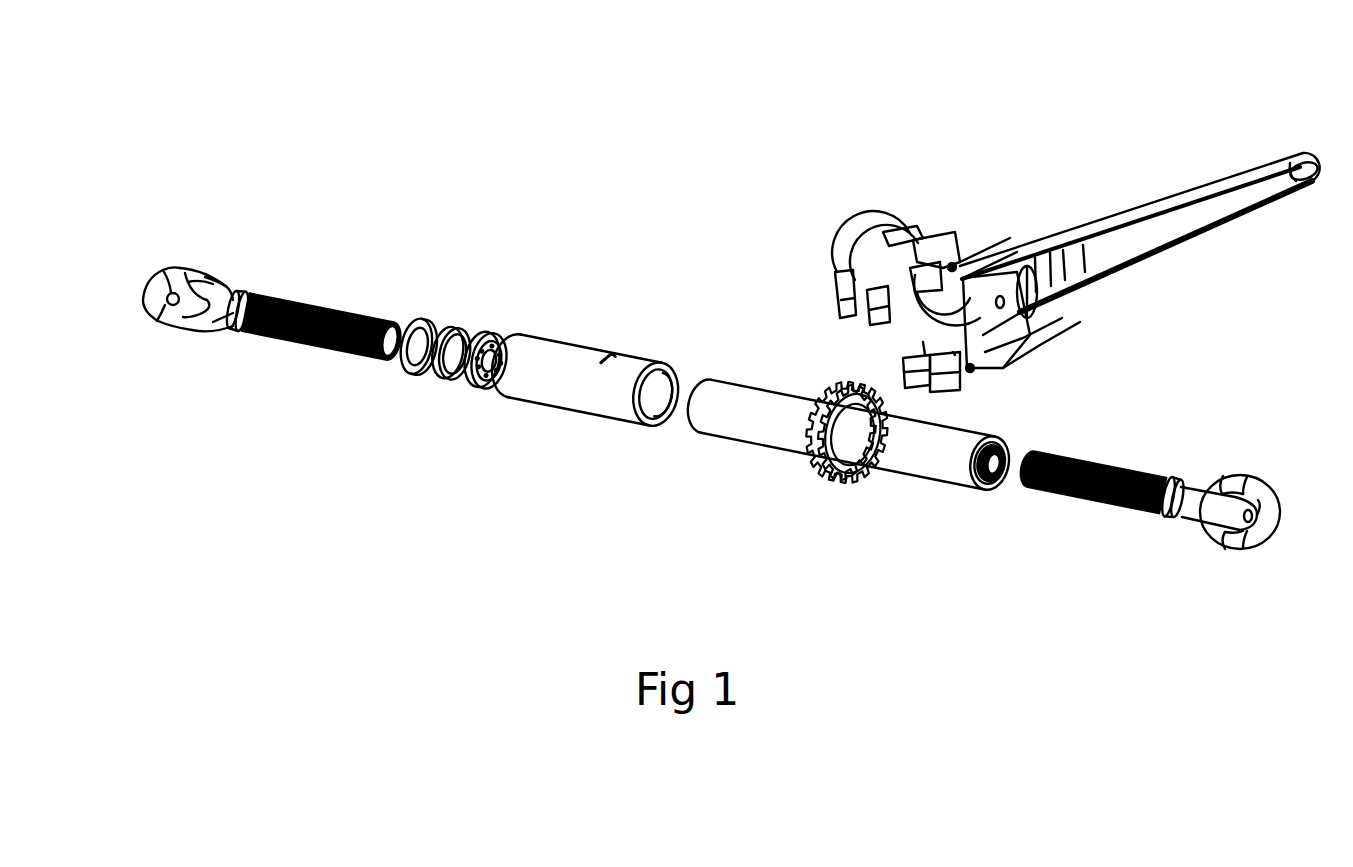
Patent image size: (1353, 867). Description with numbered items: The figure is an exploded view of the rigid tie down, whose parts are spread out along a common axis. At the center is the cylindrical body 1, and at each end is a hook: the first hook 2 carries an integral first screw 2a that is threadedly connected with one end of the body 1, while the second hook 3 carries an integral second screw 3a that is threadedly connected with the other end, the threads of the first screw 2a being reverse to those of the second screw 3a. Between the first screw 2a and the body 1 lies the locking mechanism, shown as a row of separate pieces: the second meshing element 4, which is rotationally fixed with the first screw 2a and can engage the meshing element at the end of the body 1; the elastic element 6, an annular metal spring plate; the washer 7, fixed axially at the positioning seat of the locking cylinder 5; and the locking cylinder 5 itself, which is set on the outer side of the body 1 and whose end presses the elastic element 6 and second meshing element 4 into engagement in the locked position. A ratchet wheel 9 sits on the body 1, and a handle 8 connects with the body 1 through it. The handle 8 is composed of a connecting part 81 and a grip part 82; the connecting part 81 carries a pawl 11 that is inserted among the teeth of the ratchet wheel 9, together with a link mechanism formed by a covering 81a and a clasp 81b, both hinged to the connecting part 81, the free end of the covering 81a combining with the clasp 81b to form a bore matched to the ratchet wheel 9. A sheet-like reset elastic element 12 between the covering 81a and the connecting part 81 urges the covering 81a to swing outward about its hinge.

The body 1 is at (740, 415).
The first hook 2 is at (172, 283).
The first screw 2a is at (358, 312).
The second hook 3 is at (1268, 523).
The second screw 3a is at (1108, 502).
The second meshing element 4 is at (487, 335).
The locking cylinder 5 is at (565, 370).
The elastic element 6 is at (447, 380).
The washer 7 is at (392, 360).
The handle 8 is at (1220, 207).
The ratchet wheel 9 is at (812, 452).
The pawl 11 is at (978, 258).
The reset elastic element 12 is at (1048, 300).
The connecting part 81 is at (990, 322).
The covering 81a is at (878, 250).
The clasp 81b is at (930, 370).
The grip part 82 is at (1062, 237).